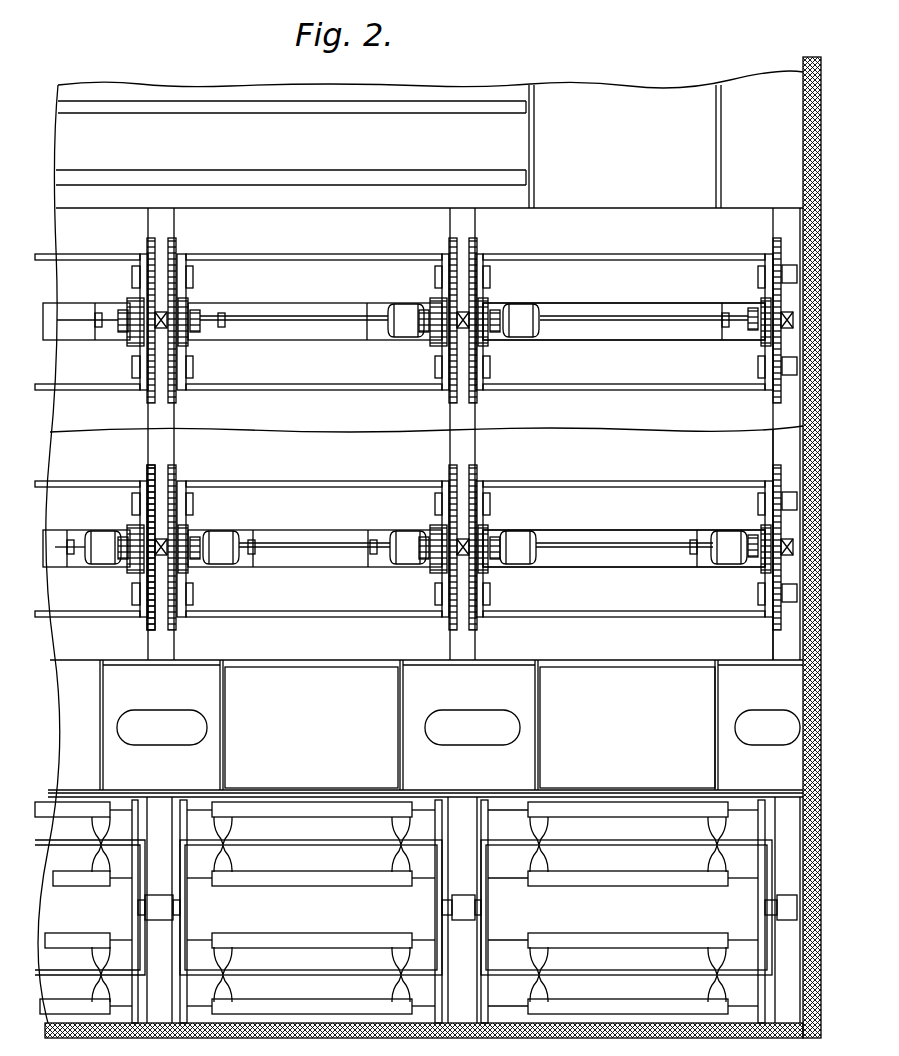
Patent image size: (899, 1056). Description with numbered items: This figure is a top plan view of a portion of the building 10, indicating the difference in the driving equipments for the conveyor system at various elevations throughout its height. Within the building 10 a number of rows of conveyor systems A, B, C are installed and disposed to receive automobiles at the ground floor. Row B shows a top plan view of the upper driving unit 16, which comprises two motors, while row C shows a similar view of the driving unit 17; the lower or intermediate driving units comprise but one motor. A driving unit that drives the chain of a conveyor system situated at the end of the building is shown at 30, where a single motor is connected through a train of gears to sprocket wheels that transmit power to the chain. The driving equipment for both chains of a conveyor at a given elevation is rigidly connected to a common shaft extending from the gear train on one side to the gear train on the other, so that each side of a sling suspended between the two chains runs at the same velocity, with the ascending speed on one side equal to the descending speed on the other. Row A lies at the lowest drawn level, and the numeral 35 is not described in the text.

The building 10 is at (804, 72).
The driving unit 16 is at (528, 587).
The driving unit 17 is at (530, 370).
The conveyor system at the end of the building 30 is at (748, 461).
The rack 35 is at (170, 456).
The conveyor system row A is at (46, 922).
The conveyor system row B is at (40, 560).
The conveyor system row C is at (40, 336).